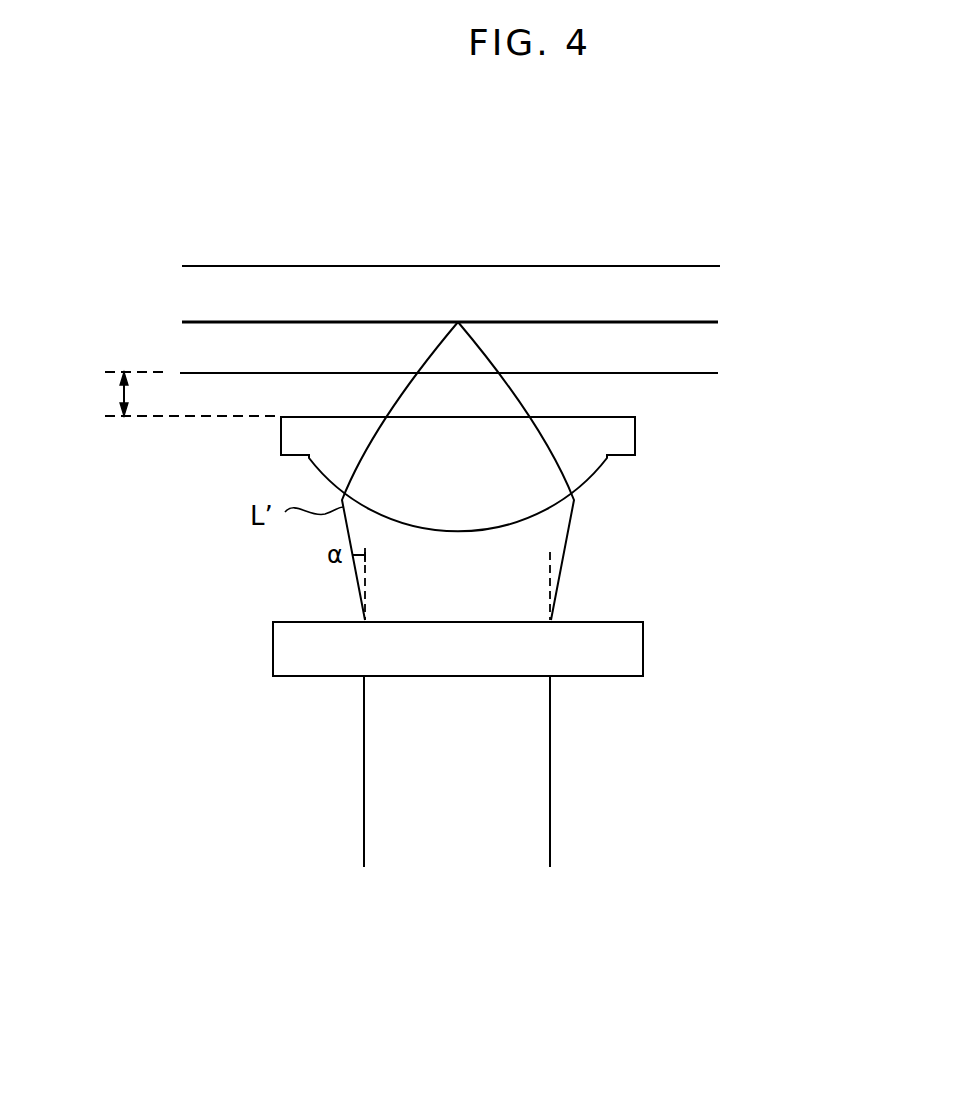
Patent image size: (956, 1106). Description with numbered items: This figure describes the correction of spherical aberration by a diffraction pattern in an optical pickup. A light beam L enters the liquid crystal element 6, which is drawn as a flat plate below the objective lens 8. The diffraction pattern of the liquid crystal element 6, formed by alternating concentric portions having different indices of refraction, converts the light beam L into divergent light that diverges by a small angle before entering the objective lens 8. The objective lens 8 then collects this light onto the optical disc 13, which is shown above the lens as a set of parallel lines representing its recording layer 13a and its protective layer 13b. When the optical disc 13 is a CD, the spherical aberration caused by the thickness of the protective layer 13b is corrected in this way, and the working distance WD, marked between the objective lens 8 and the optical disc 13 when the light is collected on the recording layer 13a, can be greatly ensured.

The optical disc 13 is at (472, 266).
The recording layer 13a is at (693, 321).
The protective layer 13b is at (700, 358).
The objective lens 8 is at (635, 440).
The liquid crystal element 6 is at (643, 652).
The light beam L is at (364, 800).
The working distance WD is at (162, 394).